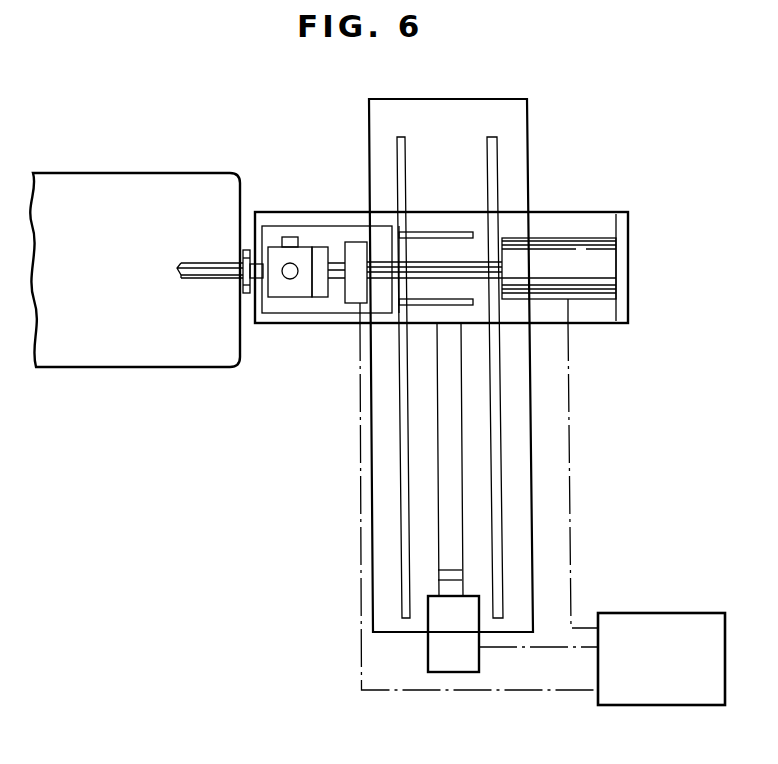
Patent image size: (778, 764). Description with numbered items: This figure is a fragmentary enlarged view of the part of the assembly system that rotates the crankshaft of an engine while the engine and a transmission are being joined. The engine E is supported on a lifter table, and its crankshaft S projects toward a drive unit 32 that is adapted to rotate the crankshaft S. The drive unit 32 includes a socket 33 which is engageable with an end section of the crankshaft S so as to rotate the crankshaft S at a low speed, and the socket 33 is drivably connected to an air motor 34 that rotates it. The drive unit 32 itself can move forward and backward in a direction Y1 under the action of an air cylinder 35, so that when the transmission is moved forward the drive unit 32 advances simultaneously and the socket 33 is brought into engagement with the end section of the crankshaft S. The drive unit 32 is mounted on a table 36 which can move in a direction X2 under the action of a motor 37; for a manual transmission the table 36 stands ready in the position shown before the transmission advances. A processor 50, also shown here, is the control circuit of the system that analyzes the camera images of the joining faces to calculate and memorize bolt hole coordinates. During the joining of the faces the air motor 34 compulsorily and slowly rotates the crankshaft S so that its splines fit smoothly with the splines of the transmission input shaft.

The engine E is at (112, 185).
The crankshaft S is at (205, 275).
The drive unit 32 is at (305, 317).
The socket 33 is at (262, 268).
The air motor 34 is at (353, 300).
The air cylinder 35 is at (581, 252).
The table 36 is at (590, 317).
The motor 37 is at (469, 657).
The processor 50 is at (659, 612).
The direction Y1 is at (377, 186).
The direction X2 is at (429, 397).